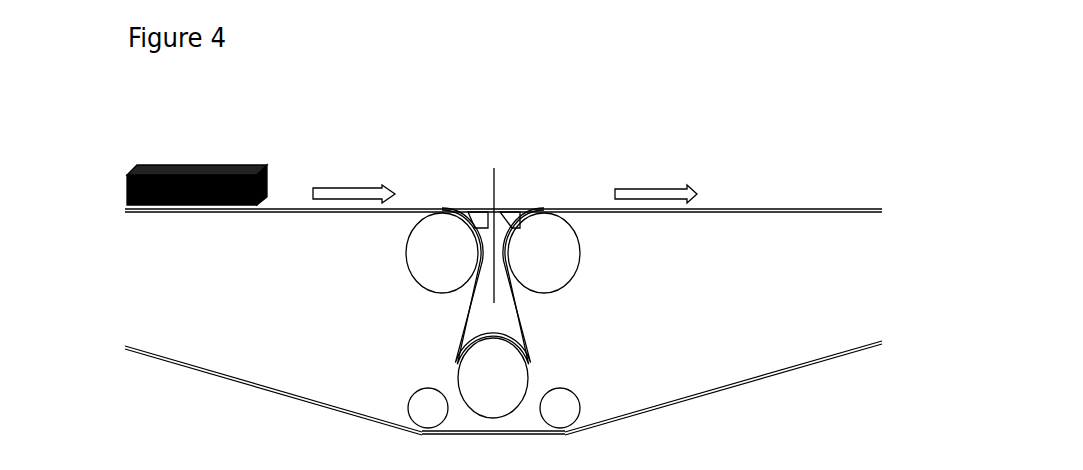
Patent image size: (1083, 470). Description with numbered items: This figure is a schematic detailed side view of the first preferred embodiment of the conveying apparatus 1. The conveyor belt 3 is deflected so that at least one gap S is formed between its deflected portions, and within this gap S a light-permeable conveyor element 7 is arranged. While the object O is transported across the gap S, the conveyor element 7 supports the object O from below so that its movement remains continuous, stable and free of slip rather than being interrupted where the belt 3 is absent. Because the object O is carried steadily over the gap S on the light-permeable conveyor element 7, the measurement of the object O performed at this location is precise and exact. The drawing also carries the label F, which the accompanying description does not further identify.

The conveying apparatus 1 is at (585, 175).
The deflected conveyor belt 3 is at (717, 210).
The light-permeable conveyor element 7 is at (476, 203).
The gap S is at (507, 207).
The object O is at (147, 160).
The feed direction F is at (353, 185).